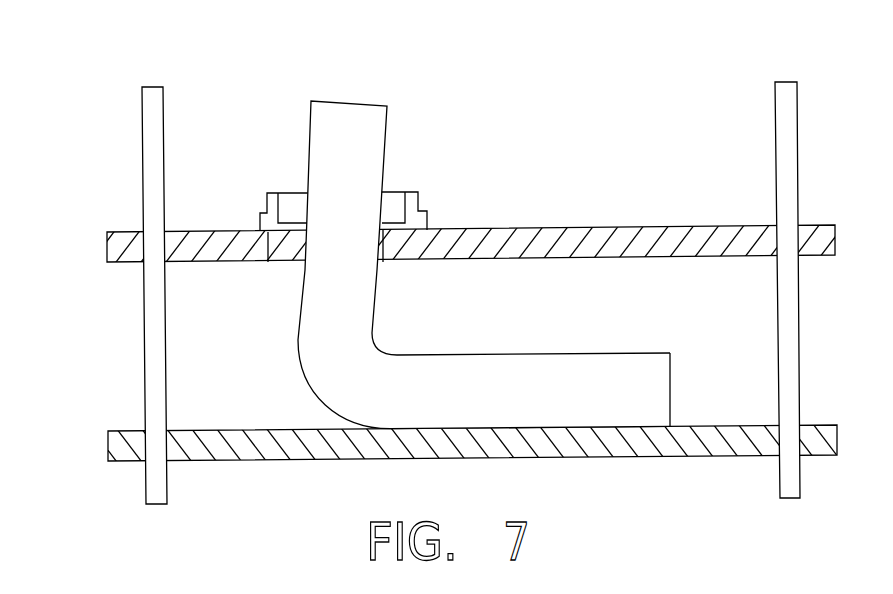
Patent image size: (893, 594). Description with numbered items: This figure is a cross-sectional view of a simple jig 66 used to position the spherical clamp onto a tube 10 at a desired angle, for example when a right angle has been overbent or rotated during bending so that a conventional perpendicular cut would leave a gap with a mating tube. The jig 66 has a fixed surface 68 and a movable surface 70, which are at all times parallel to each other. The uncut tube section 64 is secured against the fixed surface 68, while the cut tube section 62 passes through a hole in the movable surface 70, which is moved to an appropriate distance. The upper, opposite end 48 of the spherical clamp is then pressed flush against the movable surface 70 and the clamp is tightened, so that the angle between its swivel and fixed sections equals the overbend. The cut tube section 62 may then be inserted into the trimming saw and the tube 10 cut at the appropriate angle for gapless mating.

The tube 10 is at (418, 368).
The upper, opposite end 48 is at (268, 262).
The cut tube section 62 is at (310, 135).
The uncut tube section 64 is at (618, 362).
The jig 66 is at (158, 43).
The fixed surface 68 is at (277, 429).
The movable surface 70 is at (218, 231).